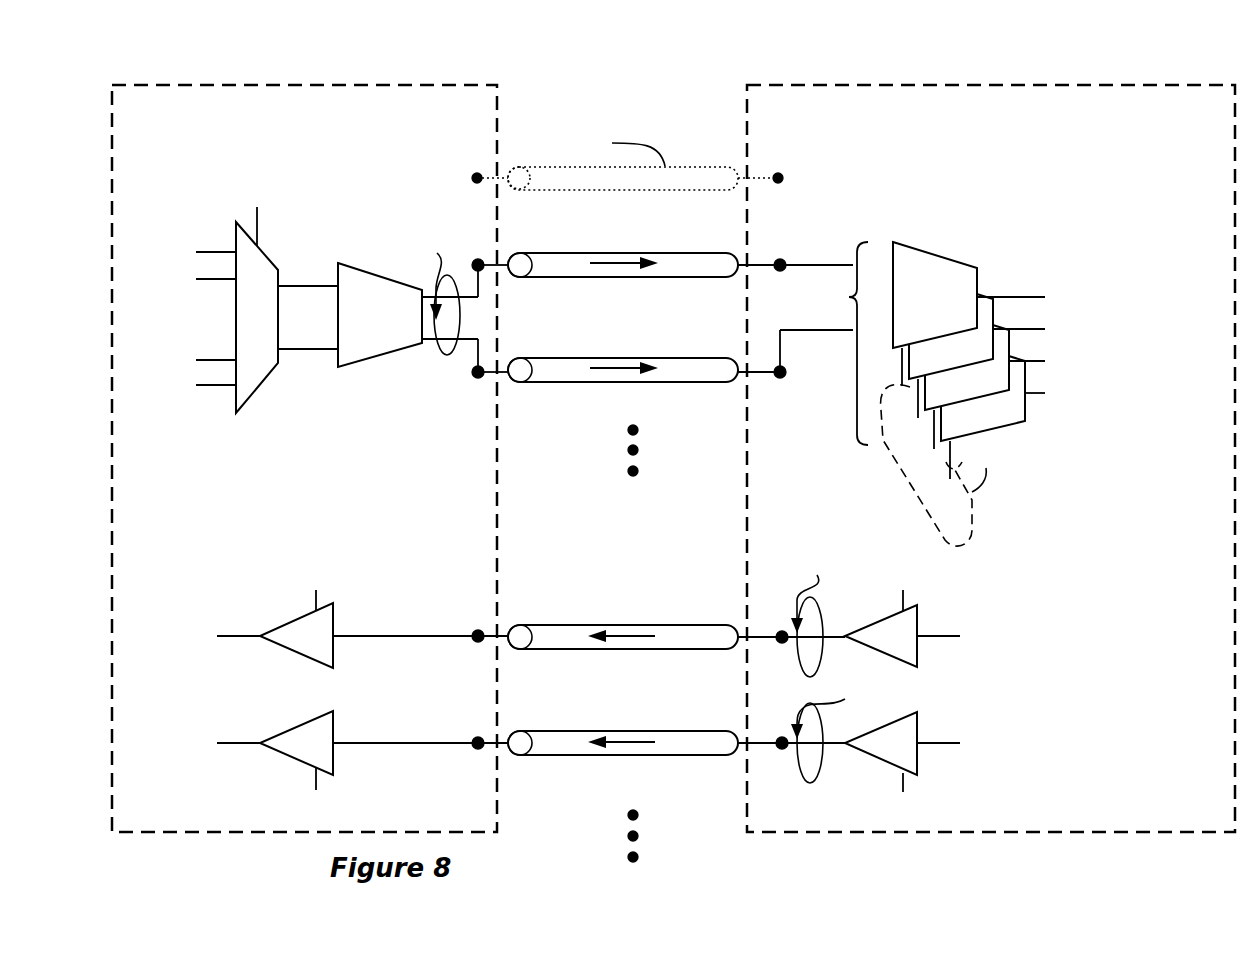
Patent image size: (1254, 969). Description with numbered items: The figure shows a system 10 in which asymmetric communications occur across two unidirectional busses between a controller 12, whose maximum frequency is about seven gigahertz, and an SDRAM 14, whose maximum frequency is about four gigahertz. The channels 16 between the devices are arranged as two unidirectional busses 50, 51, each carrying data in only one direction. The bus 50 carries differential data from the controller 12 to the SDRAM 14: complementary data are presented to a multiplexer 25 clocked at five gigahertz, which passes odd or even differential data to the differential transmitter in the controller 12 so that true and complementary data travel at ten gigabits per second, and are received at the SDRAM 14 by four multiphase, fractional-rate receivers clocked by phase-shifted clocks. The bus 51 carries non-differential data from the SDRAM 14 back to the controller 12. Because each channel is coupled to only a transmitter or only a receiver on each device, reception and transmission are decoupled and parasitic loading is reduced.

The communication system 10 is at (203, 861).
The controller 12 is at (384, 84).
The SDRAM 14 is at (843, 84).
The channels 16 is at (645, 76).
The multiplexer 25 is at (257, 391).
The unidirectional bus 50 is at (629, 334).
The unidirectional bus 51 is at (648, 706).